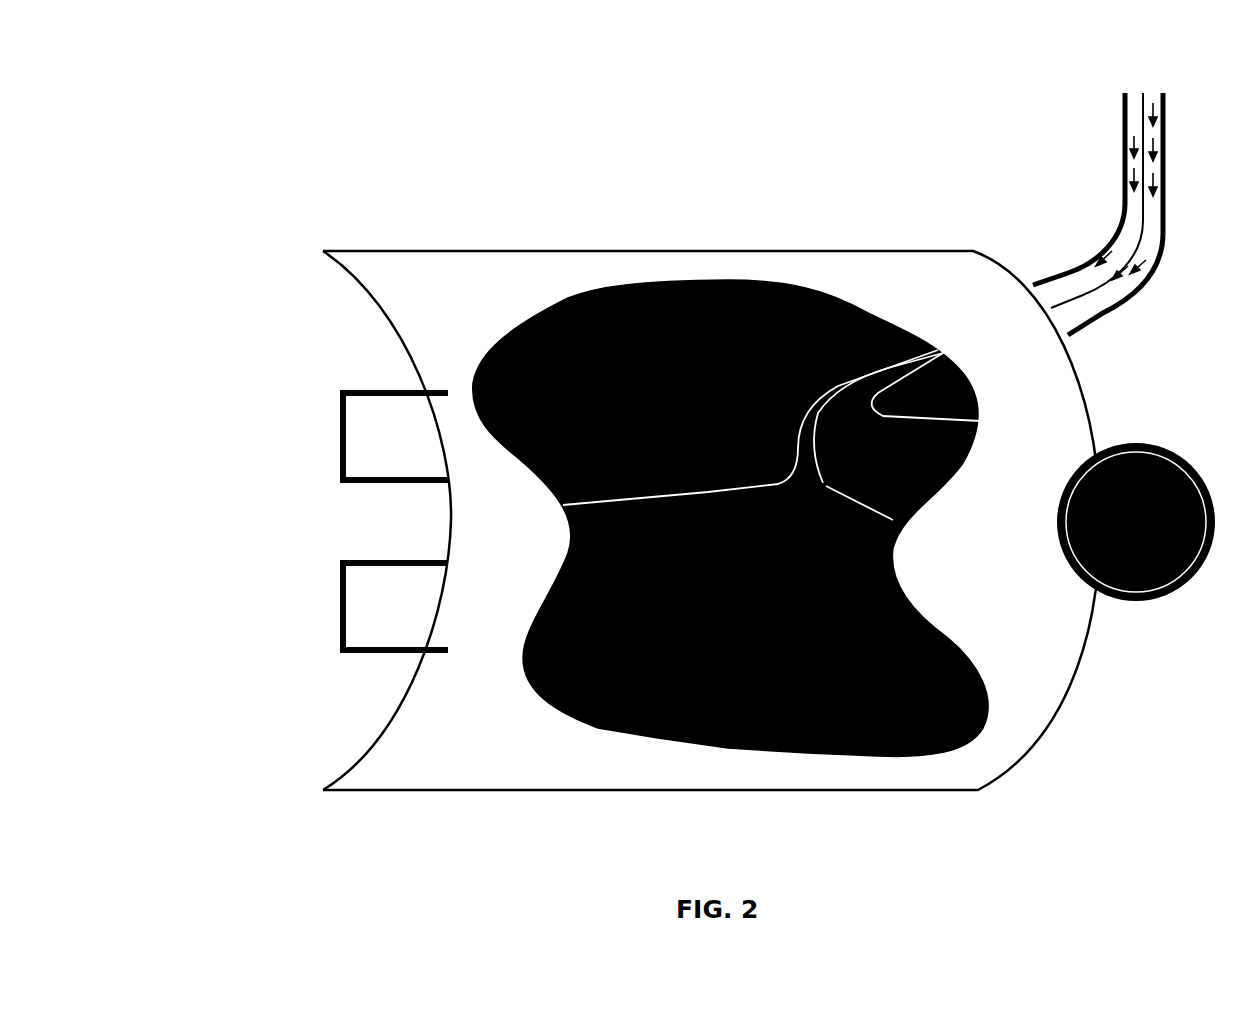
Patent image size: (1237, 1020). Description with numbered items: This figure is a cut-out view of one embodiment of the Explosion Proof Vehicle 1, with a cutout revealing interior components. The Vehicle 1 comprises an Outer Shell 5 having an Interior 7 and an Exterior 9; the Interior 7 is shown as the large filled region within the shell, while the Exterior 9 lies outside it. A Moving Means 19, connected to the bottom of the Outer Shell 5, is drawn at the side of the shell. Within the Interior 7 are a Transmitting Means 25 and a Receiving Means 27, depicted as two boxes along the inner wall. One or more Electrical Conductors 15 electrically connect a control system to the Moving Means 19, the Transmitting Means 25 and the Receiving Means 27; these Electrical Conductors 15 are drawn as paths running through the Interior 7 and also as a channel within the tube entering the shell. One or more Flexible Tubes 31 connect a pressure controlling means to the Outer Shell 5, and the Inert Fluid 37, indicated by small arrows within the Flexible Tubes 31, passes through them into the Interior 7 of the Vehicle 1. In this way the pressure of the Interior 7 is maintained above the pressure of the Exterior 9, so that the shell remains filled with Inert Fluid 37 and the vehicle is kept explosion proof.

The Explosion Proof Vehicle 1 is at (696, 459).
The Outer Shell 5 is at (1035, 653).
The Interior 7 is at (590, 652).
The Exterior 9 is at (397, 200).
The Electrical Conductors 15 is at (910, 413).
The Moving Means 19 is at (1136, 522).
The Transmitting Means 25 is at (395, 606).
The Receiving Means 27 is at (395, 436).
The Flexible Tubes 31 is at (1053, 267).
The Inert Fluid 37 is at (1080, 270).